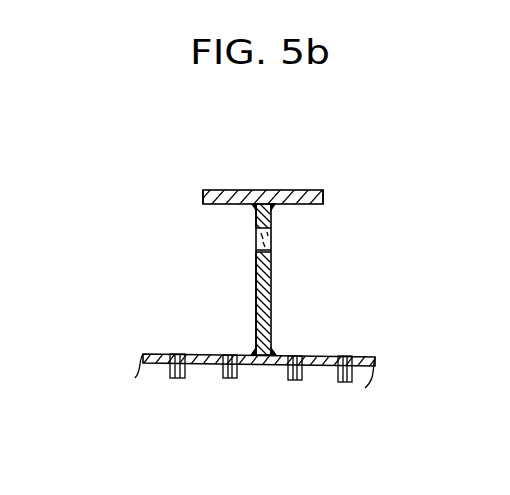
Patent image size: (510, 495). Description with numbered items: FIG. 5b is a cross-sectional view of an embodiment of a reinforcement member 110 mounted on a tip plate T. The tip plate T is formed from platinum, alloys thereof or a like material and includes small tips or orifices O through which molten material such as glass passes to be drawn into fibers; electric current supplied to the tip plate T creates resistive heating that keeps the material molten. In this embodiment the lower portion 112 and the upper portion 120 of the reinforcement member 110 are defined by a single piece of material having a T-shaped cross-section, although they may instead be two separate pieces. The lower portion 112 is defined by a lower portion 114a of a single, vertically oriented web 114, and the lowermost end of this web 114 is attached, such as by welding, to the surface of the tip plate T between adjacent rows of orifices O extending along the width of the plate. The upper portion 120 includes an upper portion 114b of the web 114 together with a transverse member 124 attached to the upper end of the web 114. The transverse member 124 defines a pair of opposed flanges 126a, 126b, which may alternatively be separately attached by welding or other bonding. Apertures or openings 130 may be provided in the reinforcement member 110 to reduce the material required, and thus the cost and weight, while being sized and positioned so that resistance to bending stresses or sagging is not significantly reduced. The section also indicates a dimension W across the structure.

The reinforcement member 110 is at (340, 230).
The lower portion 112 is at (348, 305).
The web 114 is at (252, 297).
The lower portion of the web 114a is at (231, 327).
The upper portion of the web 114b is at (239, 218).
The upper portion 120 is at (157, 214).
The transverse member 124 is at (275, 192).
The flange 126a is at (227, 190).
The flange 126b is at (318, 193).
The openings 130 is at (252, 234).
The tip plate T is at (365, 357).
The orifices O is at (175, 378).
The width dimension W is at (274, 205).